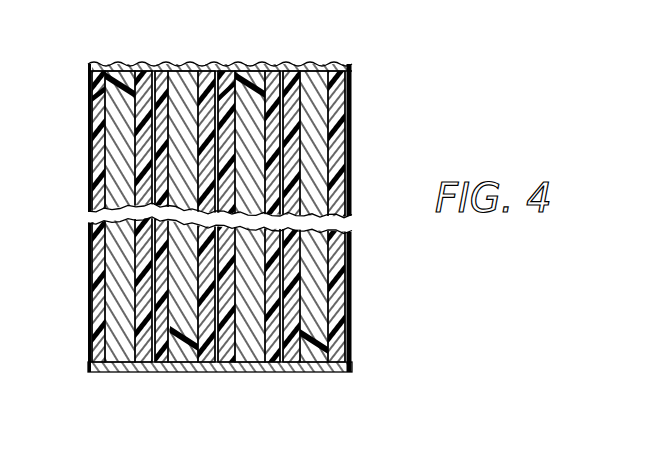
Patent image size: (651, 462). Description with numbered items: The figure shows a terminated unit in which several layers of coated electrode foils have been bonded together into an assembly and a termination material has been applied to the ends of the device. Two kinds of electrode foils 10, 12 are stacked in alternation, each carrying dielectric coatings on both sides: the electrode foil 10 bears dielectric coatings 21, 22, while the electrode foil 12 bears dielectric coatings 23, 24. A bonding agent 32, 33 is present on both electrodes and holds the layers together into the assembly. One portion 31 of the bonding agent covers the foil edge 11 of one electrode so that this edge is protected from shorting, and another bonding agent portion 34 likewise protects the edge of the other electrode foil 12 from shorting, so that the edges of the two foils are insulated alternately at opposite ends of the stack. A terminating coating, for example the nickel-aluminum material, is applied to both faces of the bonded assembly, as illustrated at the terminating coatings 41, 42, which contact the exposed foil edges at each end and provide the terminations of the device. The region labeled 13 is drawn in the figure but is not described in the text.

The electrode foil 10 is at (127, 347).
The foil edge 11 is at (100, 88).
The electrode foil 12 is at (182, 82).
The winding layer 13 is at (197, 347).
The dielectric coating 21 is at (98, 135).
The dielectric coating 22 is at (143, 80).
The dielectric coating 23 is at (343, 185).
The dielectric coating 24 is at (295, 143).
The bonding agent portion 31 is at (118, 75).
The bonding agent 32 is at (95, 290).
The bonding agent 33 is at (155, 260).
The bonding agent portion 34 is at (190, 342).
The terminating coating 41 is at (277, 63).
The terminating coating 42 is at (160, 366).